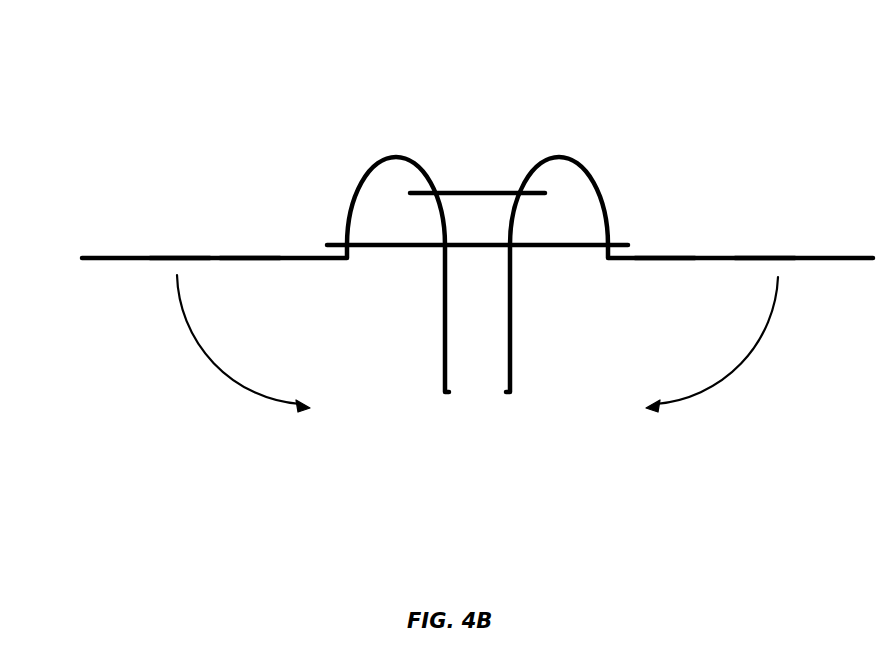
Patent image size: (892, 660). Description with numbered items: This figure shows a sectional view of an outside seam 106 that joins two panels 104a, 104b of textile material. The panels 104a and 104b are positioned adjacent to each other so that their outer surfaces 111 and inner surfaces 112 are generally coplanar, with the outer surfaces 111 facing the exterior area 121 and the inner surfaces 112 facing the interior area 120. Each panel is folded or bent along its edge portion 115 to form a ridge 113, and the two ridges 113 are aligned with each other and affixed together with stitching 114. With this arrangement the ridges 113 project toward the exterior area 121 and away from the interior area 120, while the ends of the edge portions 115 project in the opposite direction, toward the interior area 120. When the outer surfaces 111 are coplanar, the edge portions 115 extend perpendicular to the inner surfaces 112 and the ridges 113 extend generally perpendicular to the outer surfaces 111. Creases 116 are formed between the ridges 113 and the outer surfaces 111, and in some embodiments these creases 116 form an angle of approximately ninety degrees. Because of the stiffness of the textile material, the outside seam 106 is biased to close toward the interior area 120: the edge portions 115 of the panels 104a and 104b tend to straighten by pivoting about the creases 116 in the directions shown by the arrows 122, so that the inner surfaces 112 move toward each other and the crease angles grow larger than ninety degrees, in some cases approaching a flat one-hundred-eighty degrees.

The outside seam 106 is at (587, 108).
The panel 104a is at (114, 256).
The panel 104b is at (845, 256).
The outer surface 111 is at (181, 248).
The inner surface 112 is at (248, 270).
The ridge 113 is at (370, 167).
The stitching 114 is at (444, 193).
The edge portion 115 is at (449, 392).
The crease 116 is at (316, 250).
The interior area 120 is at (455, 545).
The exterior area 121 is at (212, 101).
The arrows 122 is at (193, 343).